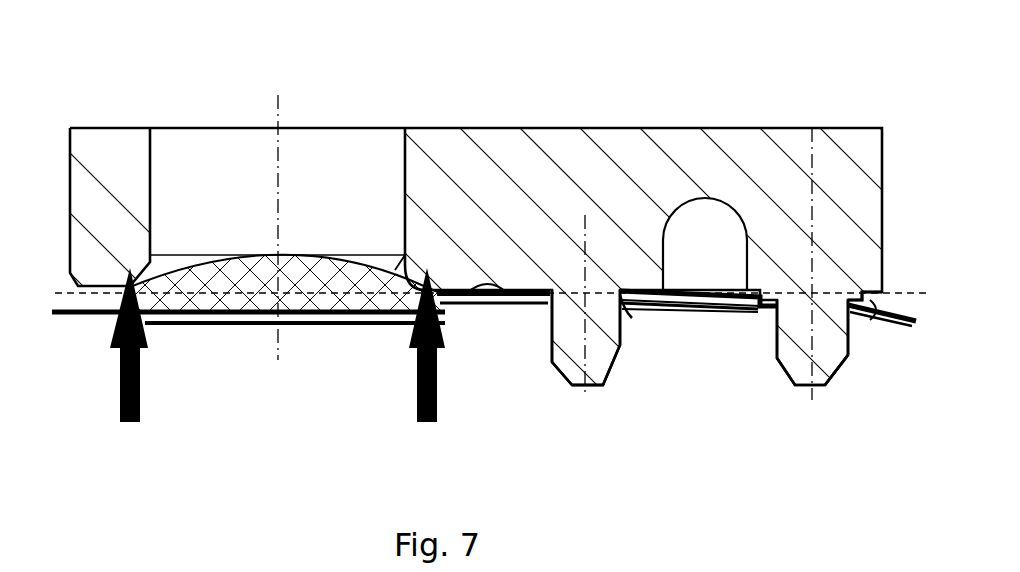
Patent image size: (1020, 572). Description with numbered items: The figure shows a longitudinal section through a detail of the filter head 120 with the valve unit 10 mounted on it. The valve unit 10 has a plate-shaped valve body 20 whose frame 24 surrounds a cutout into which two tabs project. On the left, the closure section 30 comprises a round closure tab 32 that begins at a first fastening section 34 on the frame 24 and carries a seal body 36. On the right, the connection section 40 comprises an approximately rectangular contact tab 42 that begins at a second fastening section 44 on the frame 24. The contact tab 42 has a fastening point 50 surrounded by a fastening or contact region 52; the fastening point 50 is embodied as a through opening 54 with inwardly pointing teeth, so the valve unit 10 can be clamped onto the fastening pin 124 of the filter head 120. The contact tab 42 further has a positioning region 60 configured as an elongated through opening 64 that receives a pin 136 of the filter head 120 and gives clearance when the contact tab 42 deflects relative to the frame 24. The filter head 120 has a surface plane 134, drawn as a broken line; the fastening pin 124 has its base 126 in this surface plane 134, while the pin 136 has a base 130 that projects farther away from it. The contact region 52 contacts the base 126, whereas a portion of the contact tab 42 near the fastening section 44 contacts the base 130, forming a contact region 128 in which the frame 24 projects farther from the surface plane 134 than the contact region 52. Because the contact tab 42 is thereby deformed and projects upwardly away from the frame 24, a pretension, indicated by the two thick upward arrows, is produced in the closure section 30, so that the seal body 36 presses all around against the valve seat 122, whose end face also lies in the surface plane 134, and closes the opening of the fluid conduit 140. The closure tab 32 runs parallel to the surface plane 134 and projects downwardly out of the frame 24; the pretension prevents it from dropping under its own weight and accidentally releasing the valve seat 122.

The valve unit 10 is at (318, 358).
The valve body 20 is at (176, 328).
The frame 24 is at (498, 316).
The closure section 30 is at (199, 258).
The closure tab 32 is at (458, 330).
The first fastening section 34 is at (88, 318).
The seal body 36 is at (316, 256).
The connection section 40 is at (778, 285).
The contact tab 42 is at (680, 288).
The second fastening section 44 is at (892, 330).
The fastening point 50 is at (558, 383).
The contact region 52 is at (544, 318).
The through opening 54 is at (628, 328).
The positioning region 60 is at (740, 318).
The through opening 64 is at (770, 318).
The filter head 120 is at (133, 130).
The valve seat 122 is at (390, 268).
The fastening pin 124 is at (600, 365).
The base 126 is at (510, 300).
The contact region 128 is at (812, 390).
The base 130 is at (873, 292).
The surface plane 134 is at (876, 290).
The pin 136 is at (838, 370).
The fluid conduit 140 is at (395, 178).